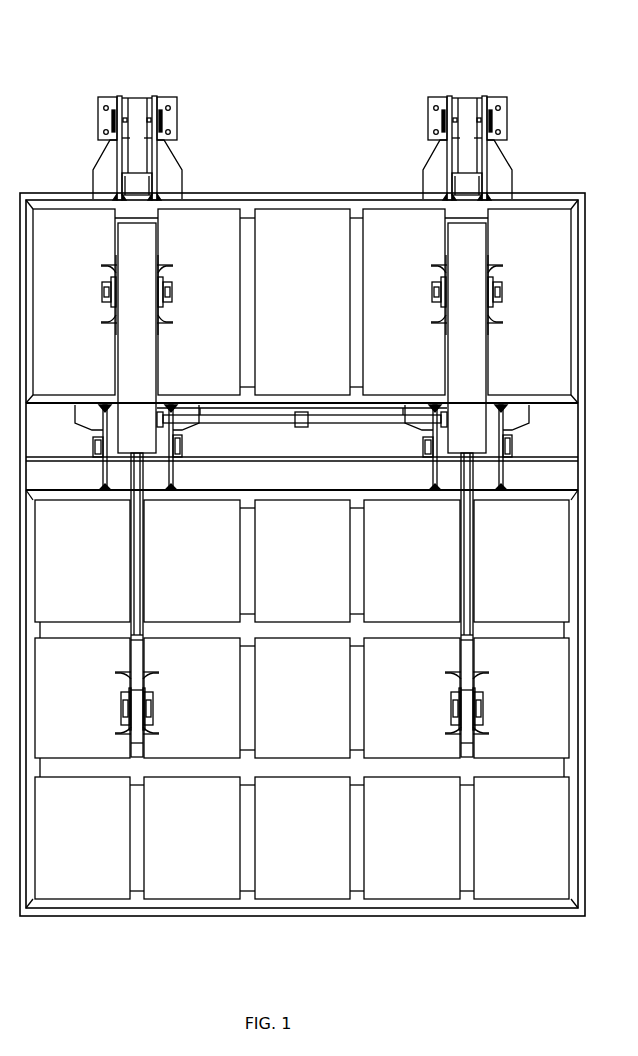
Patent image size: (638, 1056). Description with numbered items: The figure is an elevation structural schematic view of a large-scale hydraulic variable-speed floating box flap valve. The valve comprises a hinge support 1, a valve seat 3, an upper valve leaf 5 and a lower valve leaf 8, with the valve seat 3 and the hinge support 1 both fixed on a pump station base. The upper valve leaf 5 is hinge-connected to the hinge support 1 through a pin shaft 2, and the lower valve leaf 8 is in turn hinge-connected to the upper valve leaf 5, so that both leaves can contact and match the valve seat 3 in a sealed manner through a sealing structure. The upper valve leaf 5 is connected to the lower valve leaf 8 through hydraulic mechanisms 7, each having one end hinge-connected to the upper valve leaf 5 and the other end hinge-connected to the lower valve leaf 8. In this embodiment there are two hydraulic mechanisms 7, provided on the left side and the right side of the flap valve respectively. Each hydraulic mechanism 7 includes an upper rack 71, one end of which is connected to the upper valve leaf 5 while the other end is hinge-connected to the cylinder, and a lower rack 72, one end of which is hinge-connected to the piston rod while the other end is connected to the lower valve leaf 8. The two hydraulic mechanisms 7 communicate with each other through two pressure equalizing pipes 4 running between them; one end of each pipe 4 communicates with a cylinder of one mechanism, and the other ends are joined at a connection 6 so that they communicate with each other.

The hinge support 1 is at (103, 122).
The pin shaft 2 is at (116, 110).
The valve seat 3 is at (213, 197).
The pressure equalizing pipes 4 is at (230, 417).
The upper valve leaf 5 is at (283, 290).
The connection 6 is at (302, 417).
The hydraulic mechanisms 7 is at (470, 277).
The upper rack 71 is at (110, 268).
The lower rack 72 is at (143, 733).
The lower valve leaf 8 is at (302, 702).